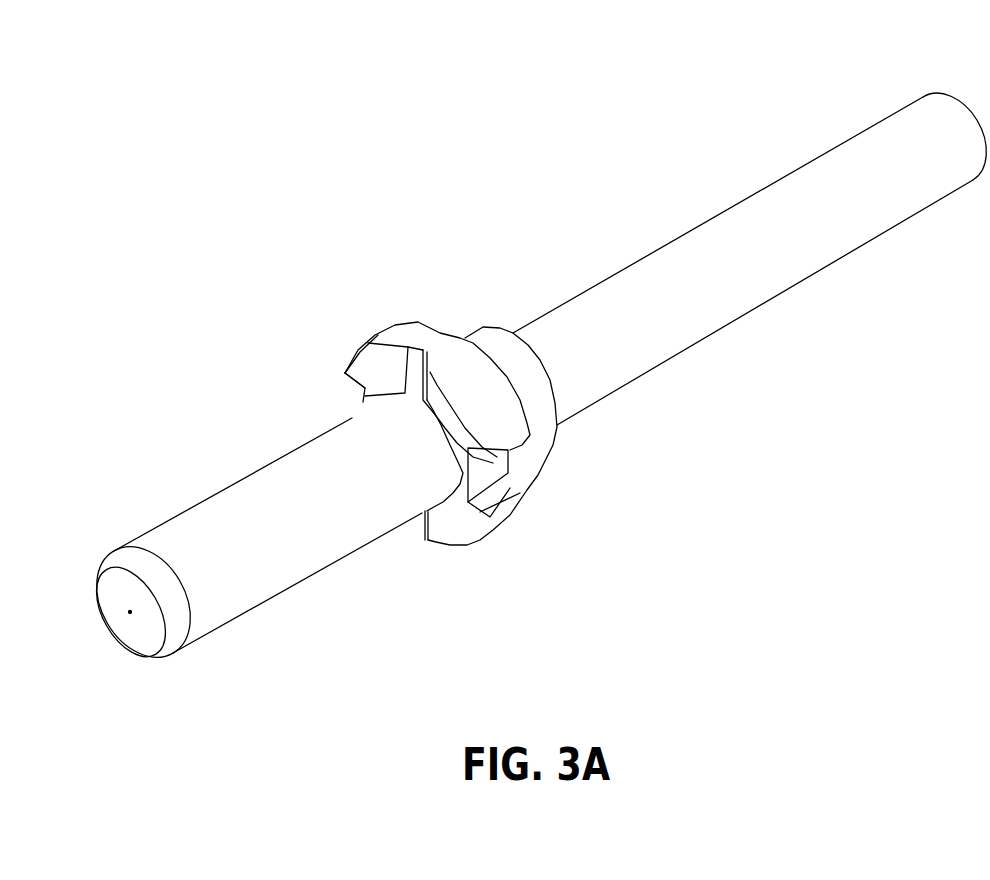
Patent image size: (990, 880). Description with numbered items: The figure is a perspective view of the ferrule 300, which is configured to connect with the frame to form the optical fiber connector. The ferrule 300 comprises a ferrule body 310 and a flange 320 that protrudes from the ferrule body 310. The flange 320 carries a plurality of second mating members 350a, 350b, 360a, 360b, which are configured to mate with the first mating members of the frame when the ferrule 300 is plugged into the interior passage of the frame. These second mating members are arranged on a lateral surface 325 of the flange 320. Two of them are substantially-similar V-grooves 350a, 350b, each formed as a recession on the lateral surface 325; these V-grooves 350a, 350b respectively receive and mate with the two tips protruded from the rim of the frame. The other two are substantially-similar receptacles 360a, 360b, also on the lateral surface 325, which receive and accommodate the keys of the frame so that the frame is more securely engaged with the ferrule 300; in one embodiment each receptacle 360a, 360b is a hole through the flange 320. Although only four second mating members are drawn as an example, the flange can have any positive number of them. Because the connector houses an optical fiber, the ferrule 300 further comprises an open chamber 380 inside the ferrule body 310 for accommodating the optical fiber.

The ferrule 300 is at (900, 476).
The ferrule body 310 is at (865, 218).
The flange 320 is at (423, 328).
The lateral surface 325 is at (379, 368).
The V-groove 350a is at (421, 364).
The V-groove 350b is at (405, 525).
The receptacle 360a is at (353, 395).
The receptacle 360b is at (513, 481).
The open chamber 380 is at (128, 618).